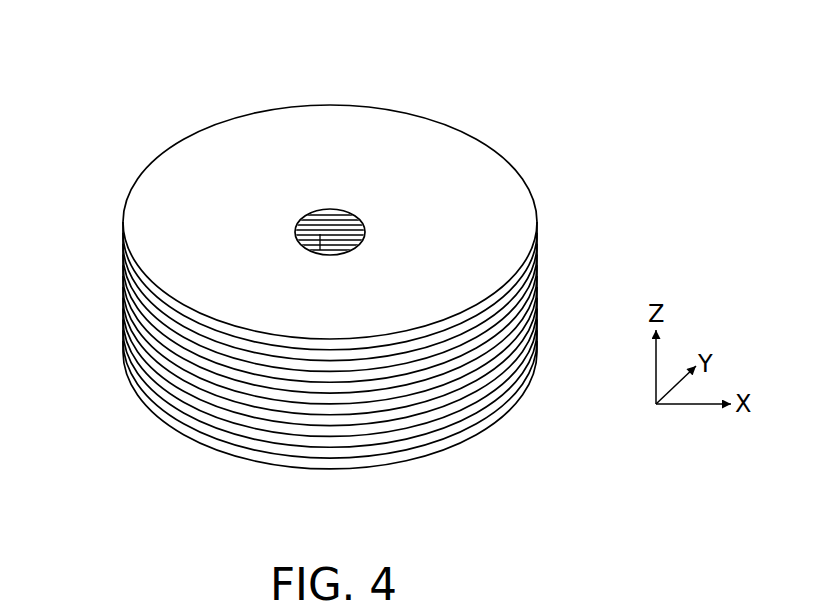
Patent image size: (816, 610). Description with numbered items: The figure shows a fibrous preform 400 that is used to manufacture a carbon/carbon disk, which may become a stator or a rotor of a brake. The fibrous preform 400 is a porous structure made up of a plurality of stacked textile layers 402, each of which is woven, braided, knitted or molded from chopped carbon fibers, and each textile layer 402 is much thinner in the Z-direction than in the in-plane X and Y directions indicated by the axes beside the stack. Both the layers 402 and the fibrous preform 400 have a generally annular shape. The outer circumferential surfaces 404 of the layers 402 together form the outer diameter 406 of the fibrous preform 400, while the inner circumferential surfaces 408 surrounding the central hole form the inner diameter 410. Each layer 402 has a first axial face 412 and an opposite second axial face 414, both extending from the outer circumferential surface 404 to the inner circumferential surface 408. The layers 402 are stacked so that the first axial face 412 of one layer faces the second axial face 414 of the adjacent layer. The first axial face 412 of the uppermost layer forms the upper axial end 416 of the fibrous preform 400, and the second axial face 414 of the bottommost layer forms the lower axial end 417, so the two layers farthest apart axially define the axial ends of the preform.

The fibrous preform 400 is at (566, 97).
The textile layer 402 is at (410, 123).
The outer circumferential surface 404 is at (191, 137).
The outer diameter 406 is at (530, 187).
The inner circumferential surface 408 is at (363, 225).
The inner diameter 410 is at (320, 213).
The first axial face 412 is at (238, 268).
The second axial face 414 is at (536, 296).
The upper axial end 416 is at (257, 120).
The lower axial end 417 is at (252, 461).